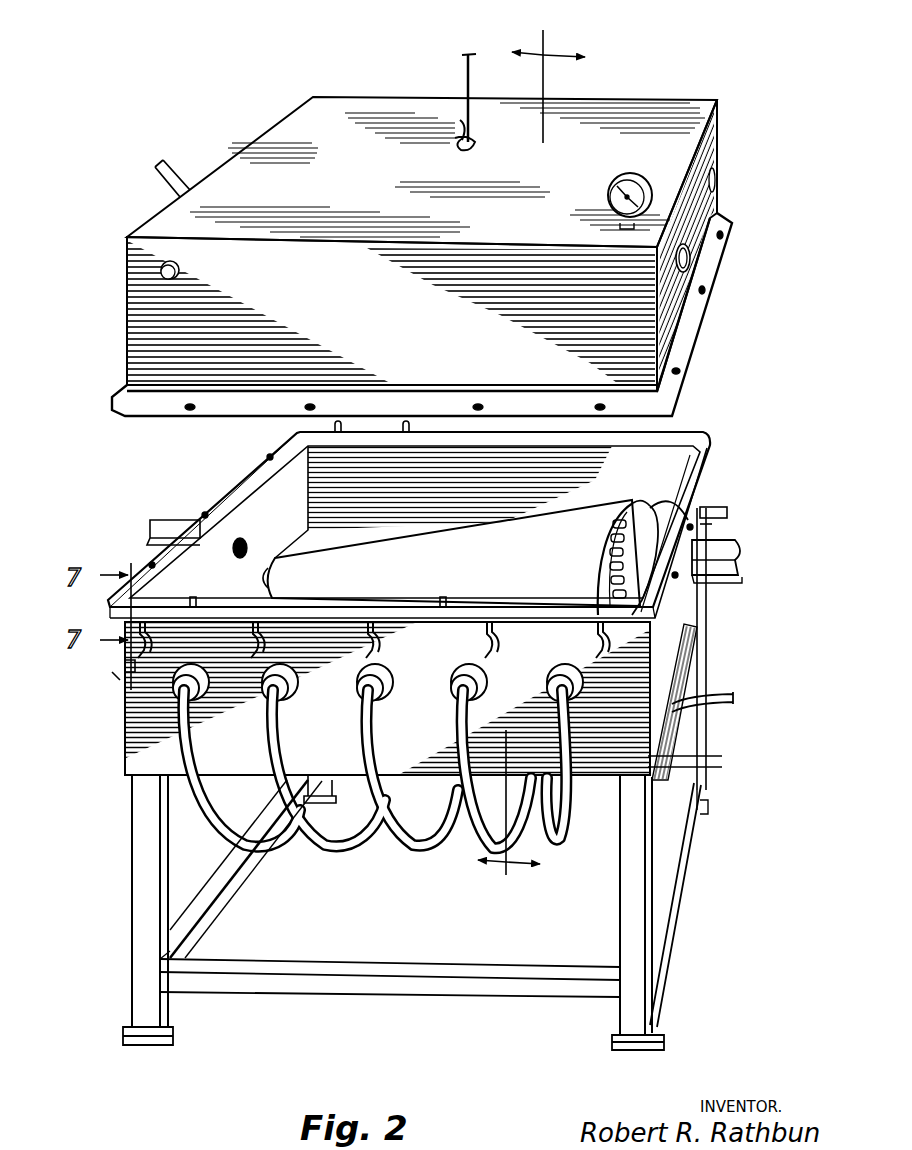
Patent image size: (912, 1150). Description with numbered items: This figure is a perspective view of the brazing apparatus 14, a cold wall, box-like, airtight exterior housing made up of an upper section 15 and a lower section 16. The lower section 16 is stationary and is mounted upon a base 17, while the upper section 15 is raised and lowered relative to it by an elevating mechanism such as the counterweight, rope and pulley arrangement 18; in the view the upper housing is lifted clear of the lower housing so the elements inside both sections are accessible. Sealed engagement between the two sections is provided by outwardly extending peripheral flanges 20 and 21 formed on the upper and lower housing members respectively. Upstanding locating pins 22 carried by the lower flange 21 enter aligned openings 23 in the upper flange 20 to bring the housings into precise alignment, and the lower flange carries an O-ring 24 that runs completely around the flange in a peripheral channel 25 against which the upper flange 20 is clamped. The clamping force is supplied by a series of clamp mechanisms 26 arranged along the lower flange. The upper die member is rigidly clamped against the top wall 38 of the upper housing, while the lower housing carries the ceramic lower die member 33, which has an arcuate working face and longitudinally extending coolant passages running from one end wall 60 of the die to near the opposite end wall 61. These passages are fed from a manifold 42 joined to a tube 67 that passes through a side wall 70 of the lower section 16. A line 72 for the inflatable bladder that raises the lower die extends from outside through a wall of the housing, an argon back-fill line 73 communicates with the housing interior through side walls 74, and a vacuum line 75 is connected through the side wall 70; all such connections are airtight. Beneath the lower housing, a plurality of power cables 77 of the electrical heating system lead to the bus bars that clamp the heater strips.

The brazing apparatus 14 is at (392, 912).
The upper section 15 is at (435, 231).
The lower section 16 is at (406, 646).
The base 17 is at (128, 935).
The counterweight, rope and pulley arrangement 18 is at (470, 57).
The peripheral flange 20 is at (690, 330).
The peripheral flange 21 is at (715, 445).
The locating pins 22 is at (266, 457).
The aligned openings 23 is at (185, 415).
The O-ring 24 is at (258, 519).
The peripheral channel 25 is at (253, 480).
The clamp mechanisms 26 is at (105, 660).
The lower die member 33 is at (451, 541).
The top wall 38 is at (422, 172).
The manifold 42 is at (612, 525).
The end wall 60 is at (625, 558).
The end wall 61 is at (268, 578).
The tube 67 is at (718, 507).
The side wall 70 is at (712, 527).
The line 72 is at (725, 707).
The argon back-fill line 73 is at (168, 520).
The side walls 74 is at (203, 520).
The vacuum line 75 is at (740, 557).
The power cables 77 is at (296, 848).